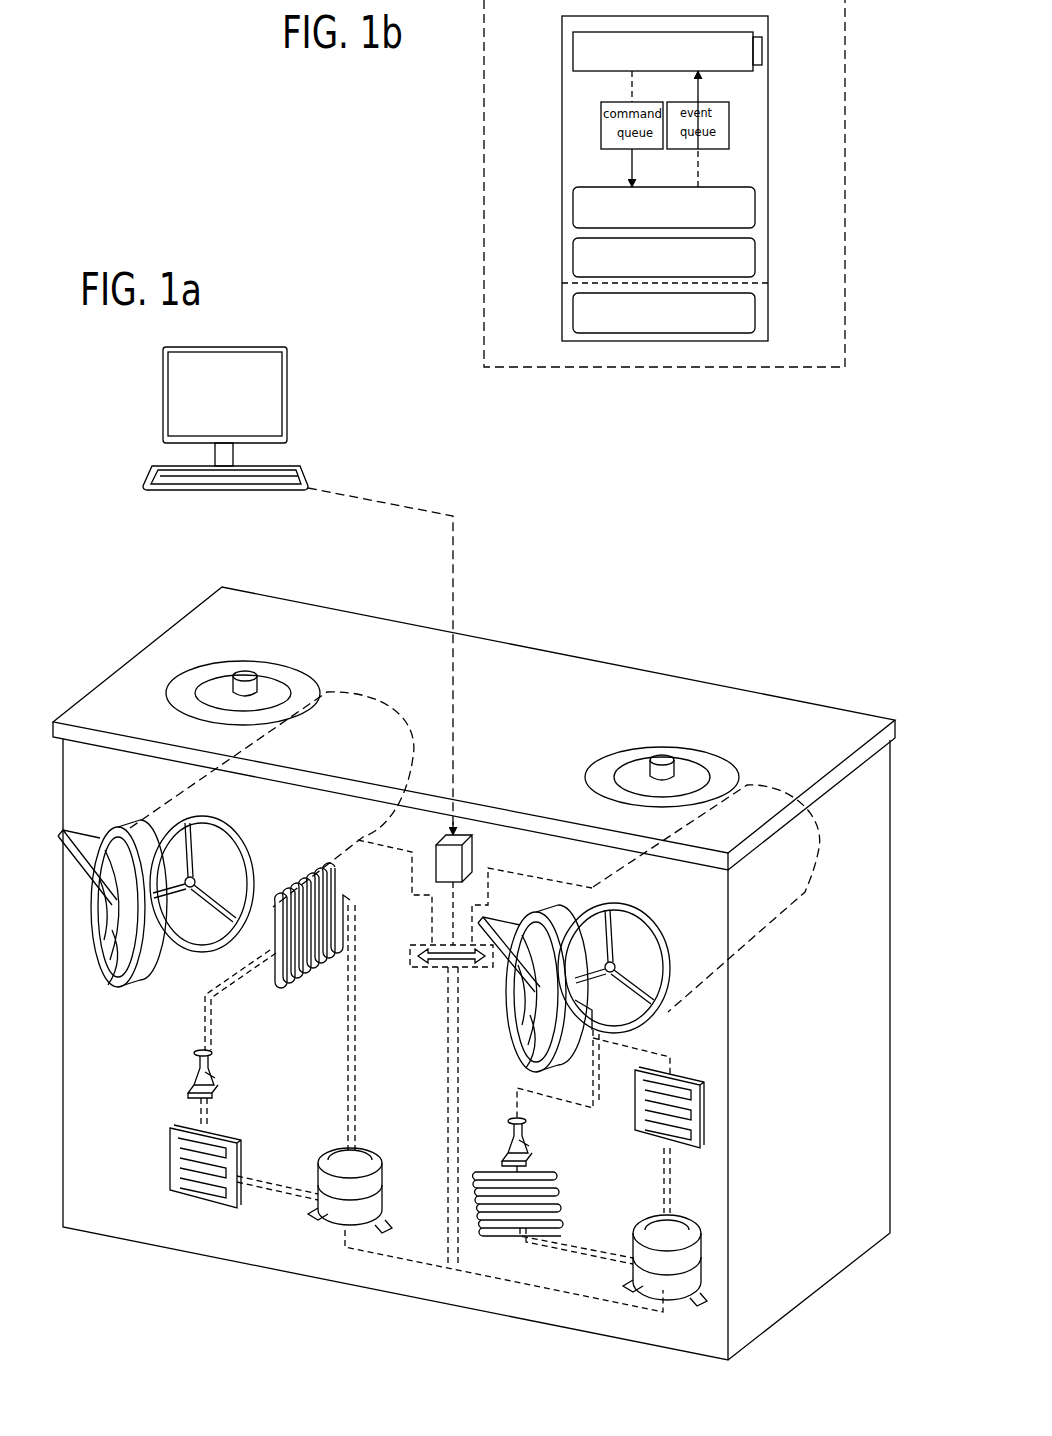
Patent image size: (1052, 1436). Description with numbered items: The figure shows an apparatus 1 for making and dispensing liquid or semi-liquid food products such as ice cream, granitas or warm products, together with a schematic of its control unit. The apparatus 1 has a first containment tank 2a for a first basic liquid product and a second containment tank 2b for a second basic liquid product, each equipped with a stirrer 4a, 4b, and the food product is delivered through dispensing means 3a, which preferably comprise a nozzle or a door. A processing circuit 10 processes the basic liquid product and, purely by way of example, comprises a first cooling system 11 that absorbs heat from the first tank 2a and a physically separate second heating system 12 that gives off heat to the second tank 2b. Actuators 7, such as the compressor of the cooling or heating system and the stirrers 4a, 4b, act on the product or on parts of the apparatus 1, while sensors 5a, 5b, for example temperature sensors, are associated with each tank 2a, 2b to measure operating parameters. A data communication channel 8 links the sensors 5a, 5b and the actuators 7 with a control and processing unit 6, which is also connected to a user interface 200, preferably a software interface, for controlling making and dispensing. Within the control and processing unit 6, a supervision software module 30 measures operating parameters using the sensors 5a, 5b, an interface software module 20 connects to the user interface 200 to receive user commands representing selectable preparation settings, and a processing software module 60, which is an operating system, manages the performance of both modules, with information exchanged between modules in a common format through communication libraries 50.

In FIG. 1a, the apparatus 1 is at (722, 630).
In FIG. 1a, the first containment tank 2a is at (212, 913).
In FIG. 1a, the second containment tank 2b is at (648, 987).
In FIG. 1a, the dispensing means 3a is at (110, 968).
In FIG. 1a, the stirrer 4a is at (175, 866).
In FIG. 1a, the stirrer 4b is at (623, 963).
In FIG. 1a, the sensor 5a is at (358, 838).
In FIG. 1a, the sensor 5b is at (592, 886).
In FIG. 1b, the control and processing unit 6 is at (484, 160).
In FIG. 1a, the control and processing unit 6 is at (455, 832).
In FIG. 1a, the actuator 7 is at (333, 1230).
In FIG. 1a, the data communication channel 8 is at (423, 978).
In FIG. 1a, the processing circuit 10 is at (158, 1163).
In FIG. 1a, the cooling system 11 is at (203, 1207).
In FIG. 1a, the heating system 12 is at (709, 1117).
In FIG. 1b, the interface software module 20 is at (762, 48).
In FIG. 1b, the supervision software module 30 is at (755, 207).
In FIG. 1b, the communication libraries 50 is at (755, 257).
In FIG. 1b, the processing software module 60 is at (755, 313).
In FIG. 1a, the user interface 200 is at (242, 407).